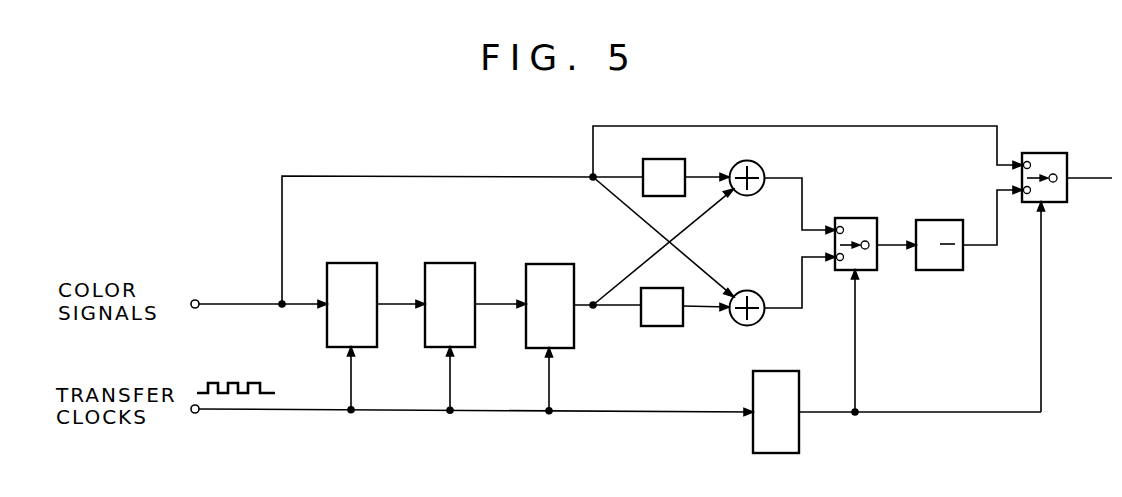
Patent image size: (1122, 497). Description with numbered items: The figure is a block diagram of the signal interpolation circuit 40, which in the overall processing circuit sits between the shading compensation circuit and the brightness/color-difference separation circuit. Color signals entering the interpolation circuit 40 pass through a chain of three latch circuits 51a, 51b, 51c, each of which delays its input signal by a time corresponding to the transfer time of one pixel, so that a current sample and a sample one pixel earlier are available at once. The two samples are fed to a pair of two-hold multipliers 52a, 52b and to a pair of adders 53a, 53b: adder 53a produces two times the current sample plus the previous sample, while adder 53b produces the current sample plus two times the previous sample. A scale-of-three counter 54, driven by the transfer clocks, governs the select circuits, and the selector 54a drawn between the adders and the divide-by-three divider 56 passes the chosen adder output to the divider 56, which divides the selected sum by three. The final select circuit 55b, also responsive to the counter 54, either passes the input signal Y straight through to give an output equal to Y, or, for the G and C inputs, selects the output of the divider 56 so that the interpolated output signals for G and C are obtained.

The signal interpolation circuit 40 is at (351, 145).
The latch circuit 51a is at (352, 263).
The latch circuit 51b is at (451, 263).
The latch circuit 51c is at (551, 264).
The two-hold multiplier 52a is at (686, 161).
The two-hold multiplier 52b is at (662, 326).
The adder 53a is at (760, 166).
The adder 53b is at (759, 321).
The scale-of-3 counter 54 is at (753, 388).
The switch 54a is at (855, 218).
The select circuit 55b is at (1045, 153).
The divide-by-3 divider 56 is at (940, 220).